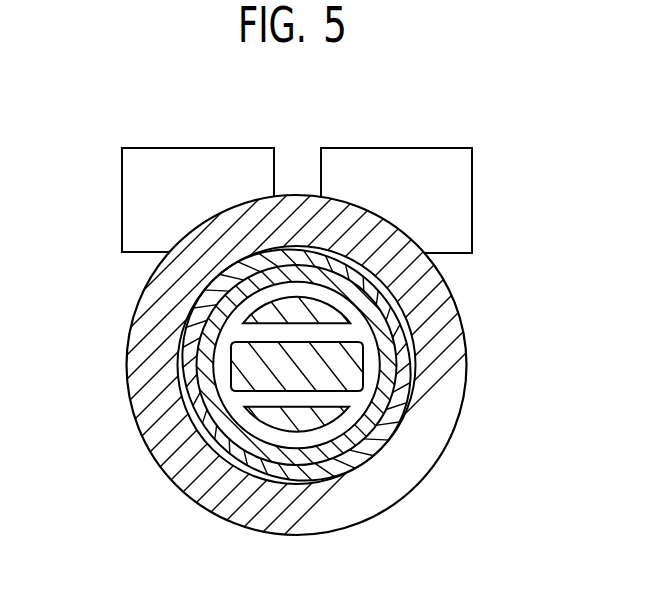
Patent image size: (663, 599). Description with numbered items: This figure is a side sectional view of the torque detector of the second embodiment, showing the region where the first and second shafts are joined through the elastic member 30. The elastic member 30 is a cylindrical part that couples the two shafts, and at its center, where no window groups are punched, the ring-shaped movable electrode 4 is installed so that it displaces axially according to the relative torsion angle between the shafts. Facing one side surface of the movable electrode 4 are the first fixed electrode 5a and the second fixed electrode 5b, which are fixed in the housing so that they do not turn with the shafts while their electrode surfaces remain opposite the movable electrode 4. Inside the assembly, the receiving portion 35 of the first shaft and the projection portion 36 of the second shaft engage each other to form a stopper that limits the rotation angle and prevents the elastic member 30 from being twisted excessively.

The movable electrode 4 is at (145, 318).
The first fixed electrode 5a is at (350, 156).
The second fixed electrode 5b is at (216, 158).
The elastic member 30 is at (392, 368).
The receiving portion 35 is at (290, 423).
The projection portion 36 is at (235, 372).